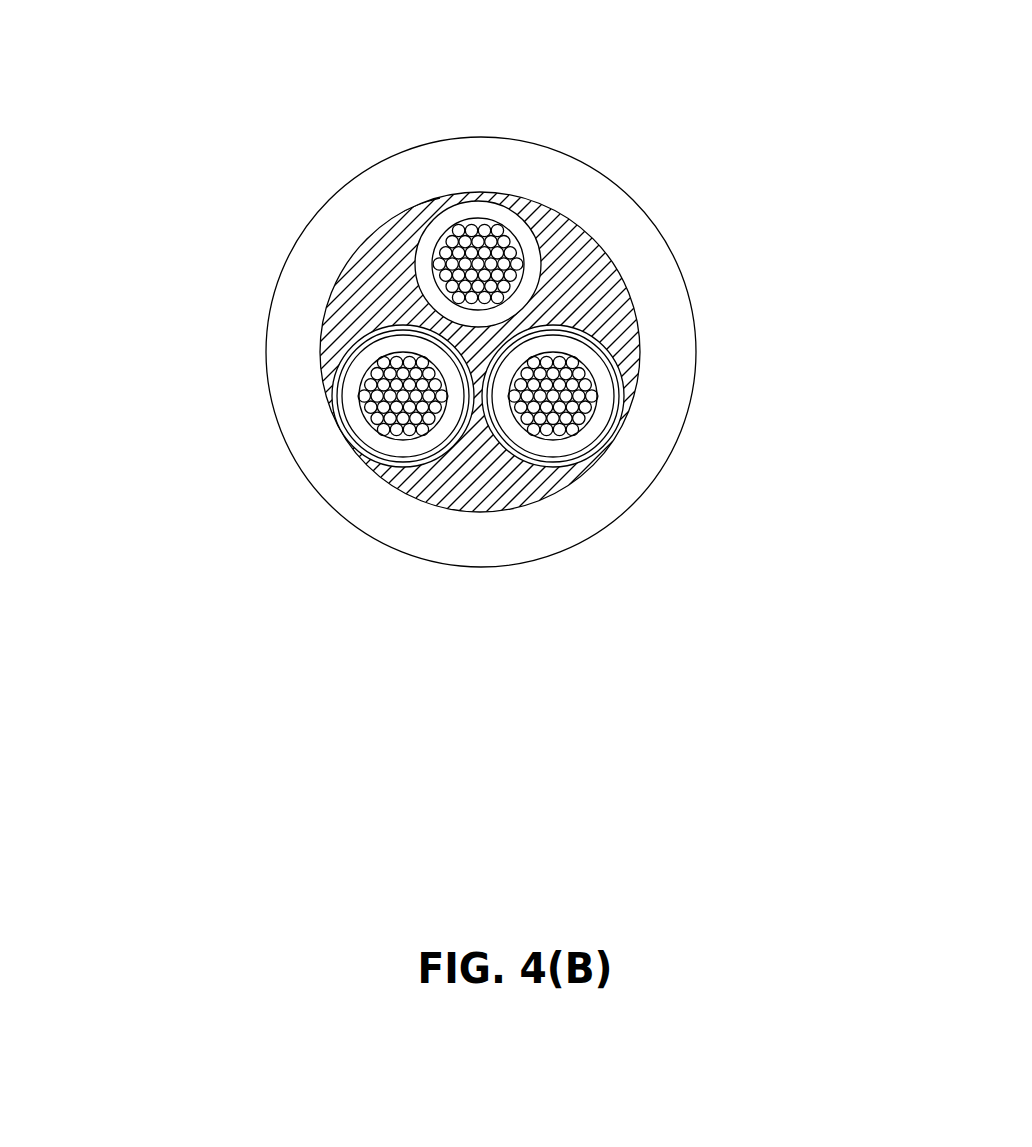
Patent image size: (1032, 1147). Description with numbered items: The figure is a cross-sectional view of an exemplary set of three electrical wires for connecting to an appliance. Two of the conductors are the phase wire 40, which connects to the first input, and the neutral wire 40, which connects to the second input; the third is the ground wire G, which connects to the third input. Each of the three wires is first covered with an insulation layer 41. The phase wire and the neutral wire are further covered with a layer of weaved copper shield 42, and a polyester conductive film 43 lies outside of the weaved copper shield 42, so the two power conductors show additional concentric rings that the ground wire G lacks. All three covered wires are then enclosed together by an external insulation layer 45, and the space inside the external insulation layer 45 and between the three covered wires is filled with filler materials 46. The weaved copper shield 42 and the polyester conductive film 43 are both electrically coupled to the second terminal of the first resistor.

The phase wire and neutral wire 40 is at (371, 388).
The insulation layer 41 is at (514, 208).
The weaved copper shield 42 is at (333, 438).
The polyester conductive film 43 is at (336, 453).
The external insulation layer 45 is at (651, 463).
The filler materials 46 is at (354, 284).
The ground wire G is at (535, 241).